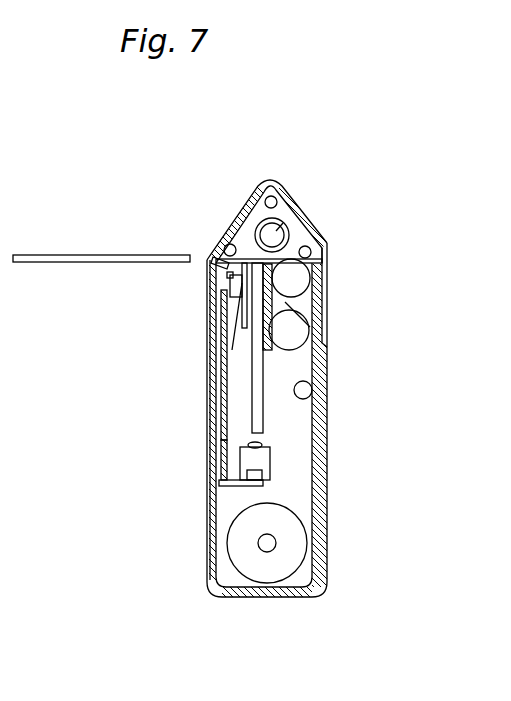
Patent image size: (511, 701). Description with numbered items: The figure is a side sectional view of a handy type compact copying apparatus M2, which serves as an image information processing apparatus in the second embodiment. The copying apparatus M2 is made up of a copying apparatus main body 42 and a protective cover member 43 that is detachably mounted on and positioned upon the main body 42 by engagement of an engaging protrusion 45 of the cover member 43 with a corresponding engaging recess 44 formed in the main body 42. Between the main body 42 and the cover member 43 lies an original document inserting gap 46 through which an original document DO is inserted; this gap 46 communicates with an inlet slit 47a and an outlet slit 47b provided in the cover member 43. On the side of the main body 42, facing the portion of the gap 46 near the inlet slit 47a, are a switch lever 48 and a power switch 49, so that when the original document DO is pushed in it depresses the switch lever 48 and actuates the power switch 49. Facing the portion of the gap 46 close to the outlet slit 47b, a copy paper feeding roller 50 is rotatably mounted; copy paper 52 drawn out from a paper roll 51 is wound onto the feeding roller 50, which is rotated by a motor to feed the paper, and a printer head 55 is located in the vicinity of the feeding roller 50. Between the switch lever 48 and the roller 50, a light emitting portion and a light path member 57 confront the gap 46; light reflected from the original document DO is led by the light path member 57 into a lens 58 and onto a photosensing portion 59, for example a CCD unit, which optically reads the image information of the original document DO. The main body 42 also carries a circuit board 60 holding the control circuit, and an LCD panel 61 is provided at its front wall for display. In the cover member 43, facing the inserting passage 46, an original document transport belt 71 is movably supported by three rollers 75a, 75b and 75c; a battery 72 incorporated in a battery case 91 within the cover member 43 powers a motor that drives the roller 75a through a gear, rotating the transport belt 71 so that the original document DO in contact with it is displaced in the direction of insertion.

The copying apparatus M2 is at (233, 162).
The original document DO is at (113, 263).
The copying apparatus main body 42 is at (210, 528).
The protective cover member 43 is at (240, 190).
The engaging recess 44 is at (214, 338).
The engaging protrusion 45 is at (214, 358).
The original document inserting gap 46 is at (207, 260).
The inlet slit 47a is at (212, 265).
The outlet slit 47b is at (328, 261).
The switch lever 48 is at (230, 282).
The power switch 49 is at (216, 332).
The copy paper feeding roller 50 is at (297, 277).
The paper roll 51 is at (290, 547).
The copy paper 52 is at (308, 396).
The printer head 55 is at (322, 303).
The light path member 57 is at (224, 430).
The lens 58 is at (262, 445).
The photosensing portion 59 is at (271, 467).
The circuit board 60 is at (222, 485).
The LCD panel 61 is at (222, 462).
The original document transport belt 71 is at (289, 227).
The battery 72 is at (268, 228).
The roller 75a is at (275, 196).
The roller 75b is at (229, 244).
The roller 75c is at (311, 252).
The battery case 91 is at (283, 223).